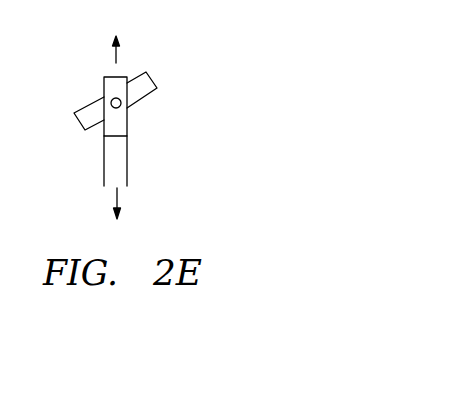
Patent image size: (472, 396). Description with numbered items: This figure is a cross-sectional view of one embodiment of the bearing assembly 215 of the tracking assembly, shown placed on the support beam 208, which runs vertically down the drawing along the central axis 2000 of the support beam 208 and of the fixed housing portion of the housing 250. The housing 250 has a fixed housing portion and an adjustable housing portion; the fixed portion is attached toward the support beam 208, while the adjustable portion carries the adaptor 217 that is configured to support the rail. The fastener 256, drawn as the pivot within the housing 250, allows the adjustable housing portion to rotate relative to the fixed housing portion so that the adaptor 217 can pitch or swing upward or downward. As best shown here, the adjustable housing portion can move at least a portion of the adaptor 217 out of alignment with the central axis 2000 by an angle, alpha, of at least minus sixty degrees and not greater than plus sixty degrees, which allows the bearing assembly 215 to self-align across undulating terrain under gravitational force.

The bearing assembly 215 is at (248, 43).
The housing 250 is at (128, 76).
The fastener 256 is at (109, 101).
The adaptor 217 is at (158, 90).
The support beam 208 is at (128, 160).
The central axis 2000 is at (121, 200).